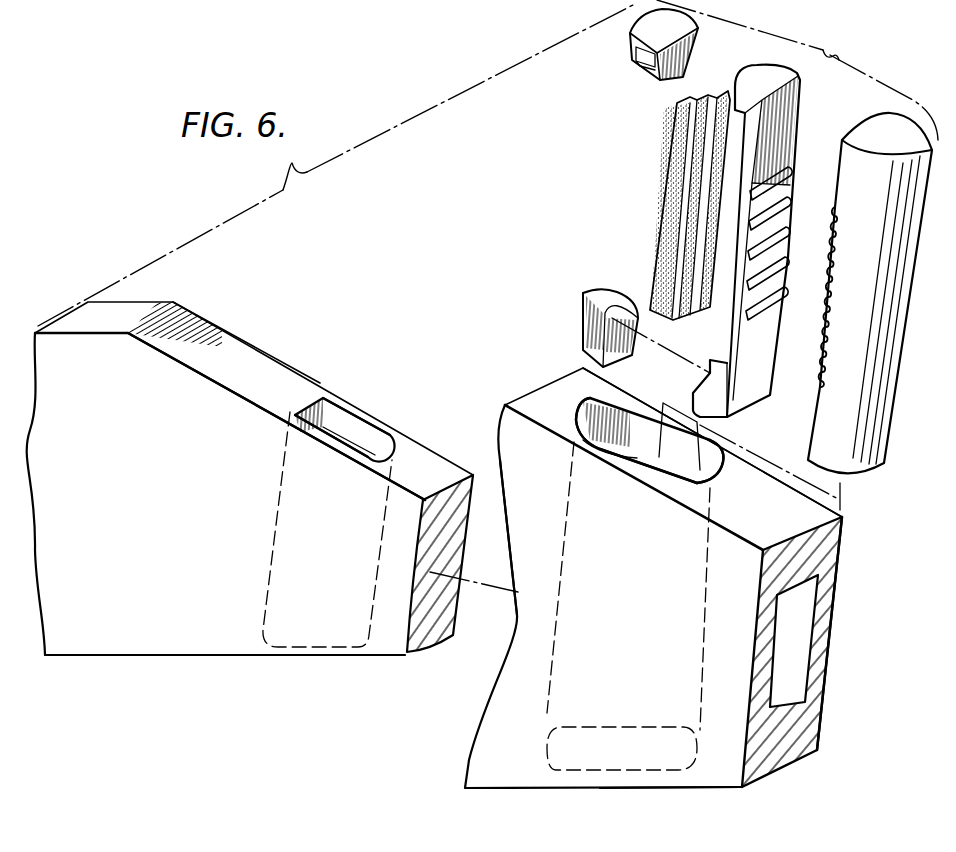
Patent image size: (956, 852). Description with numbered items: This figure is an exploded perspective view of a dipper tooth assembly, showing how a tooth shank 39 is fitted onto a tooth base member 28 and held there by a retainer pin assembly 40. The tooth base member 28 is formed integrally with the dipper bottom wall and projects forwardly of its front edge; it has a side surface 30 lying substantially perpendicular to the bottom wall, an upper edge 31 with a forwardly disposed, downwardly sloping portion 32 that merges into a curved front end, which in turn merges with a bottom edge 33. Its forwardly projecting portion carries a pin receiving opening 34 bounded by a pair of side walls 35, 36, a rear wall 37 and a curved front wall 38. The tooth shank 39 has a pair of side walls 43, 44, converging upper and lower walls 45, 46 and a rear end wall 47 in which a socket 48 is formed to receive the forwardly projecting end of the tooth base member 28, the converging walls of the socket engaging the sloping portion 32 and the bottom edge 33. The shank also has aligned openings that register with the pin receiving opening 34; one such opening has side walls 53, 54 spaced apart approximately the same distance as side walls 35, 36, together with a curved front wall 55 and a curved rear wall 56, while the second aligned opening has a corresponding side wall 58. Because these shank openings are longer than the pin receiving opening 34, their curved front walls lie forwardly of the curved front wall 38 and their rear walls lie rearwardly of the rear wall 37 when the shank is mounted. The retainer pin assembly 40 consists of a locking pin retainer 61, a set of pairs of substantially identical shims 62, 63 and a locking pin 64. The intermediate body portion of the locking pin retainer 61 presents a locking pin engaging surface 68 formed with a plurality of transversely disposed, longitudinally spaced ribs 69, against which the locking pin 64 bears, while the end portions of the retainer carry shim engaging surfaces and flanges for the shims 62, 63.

The tooth base member 28 is at (247, 336).
The side surface 30 is at (245, 632).
The upper edge 31 is at (100, 312).
The downwardly sloping portion 32 is at (258, 388).
The bottom edge 33 is at (117, 655).
The pin receiving opening 34 is at (372, 432).
The side wall 35 is at (350, 418).
The side wall 36 is at (330, 440).
The rear wall 37 is at (320, 396).
The curved front wall 38 is at (395, 444).
The tooth shank 39 is at (841, 588).
The retainer pin assembly 40 is at (628, 182).
The side wall 43 is at (512, 690).
The side wall 44 is at (828, 646).
The upper wall 45 is at (808, 516).
The lower wall 46 is at (688, 788).
The rear end wall 47 is at (507, 666).
The socket 48 is at (806, 690).
The side wall 53 is at (647, 420).
The side wall 54 is at (623, 457).
The curved front wall 55 is at (700, 478).
The curved rear wall 56 is at (580, 408).
The side wall 58 is at (602, 760).
The locking pin retainer 61 is at (799, 110).
The shim 62 is at (630, 60).
The shim 63 is at (583, 322).
The locking pin 64 is at (885, 316).
The locking pin engaging surface 68 is at (778, 153).
The ribs 69 is at (788, 256).